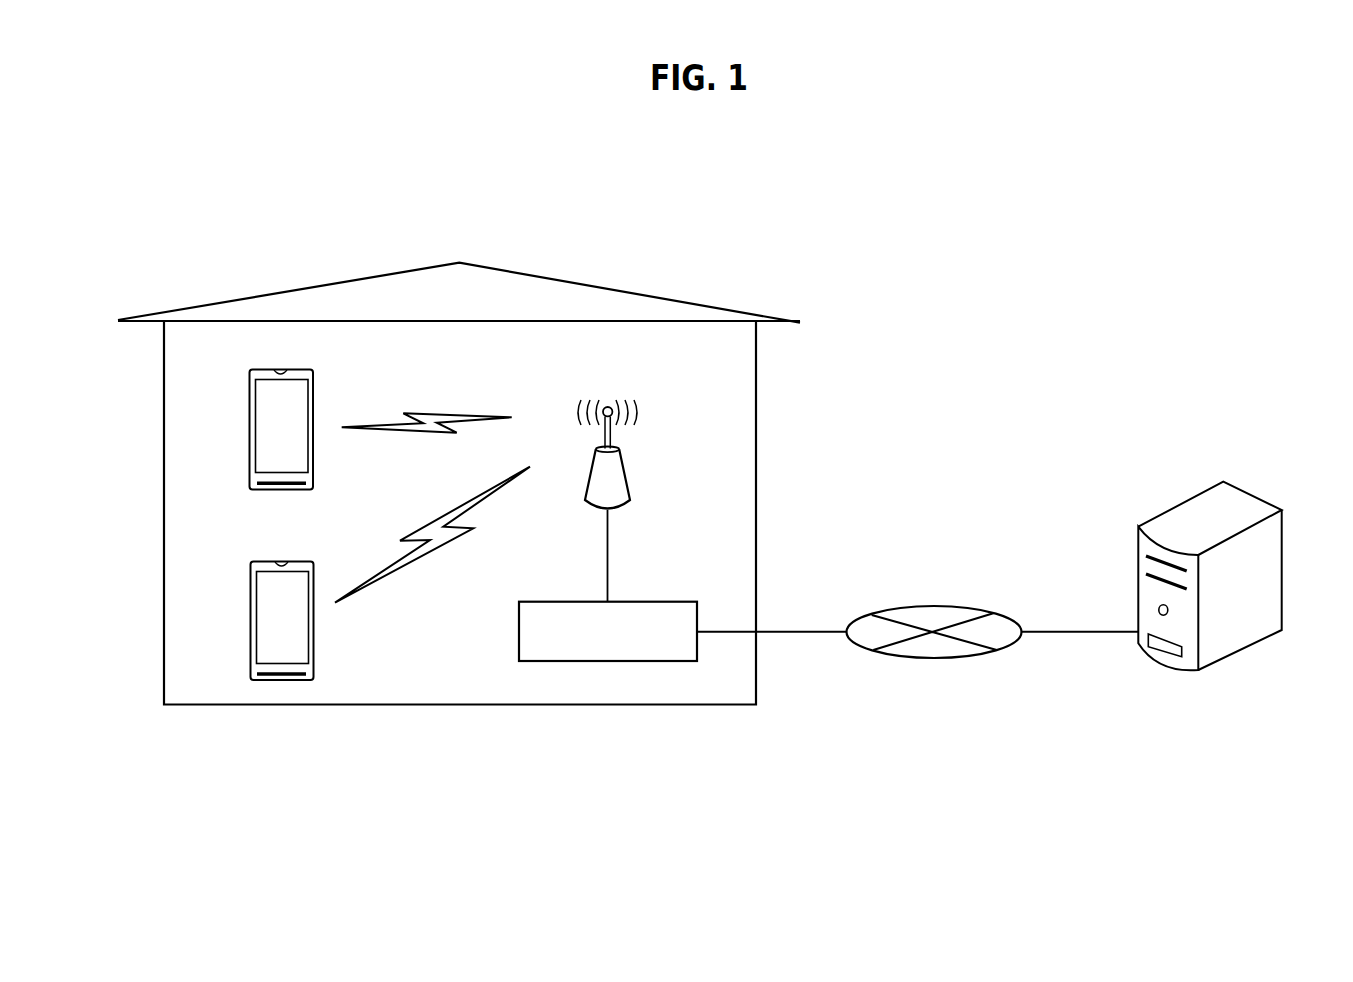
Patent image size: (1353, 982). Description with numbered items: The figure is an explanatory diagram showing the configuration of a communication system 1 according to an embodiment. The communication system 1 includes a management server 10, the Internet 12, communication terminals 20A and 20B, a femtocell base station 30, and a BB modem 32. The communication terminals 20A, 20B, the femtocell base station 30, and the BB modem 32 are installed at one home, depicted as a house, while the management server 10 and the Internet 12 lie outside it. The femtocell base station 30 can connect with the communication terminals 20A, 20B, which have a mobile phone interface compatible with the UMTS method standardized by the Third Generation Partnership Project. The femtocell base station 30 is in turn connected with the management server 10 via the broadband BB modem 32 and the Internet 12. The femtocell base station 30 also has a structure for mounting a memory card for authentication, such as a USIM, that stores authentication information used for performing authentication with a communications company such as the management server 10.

The communication system 1 is at (985, 287).
The management server 10 is at (1178, 502).
The Internet 12 is at (930, 606).
The communication terminal 20A is at (284, 370).
The communication terminal 20B is at (286, 563).
The femtocell base station 30 is at (629, 472).
The BB modem 32 is at (670, 602).